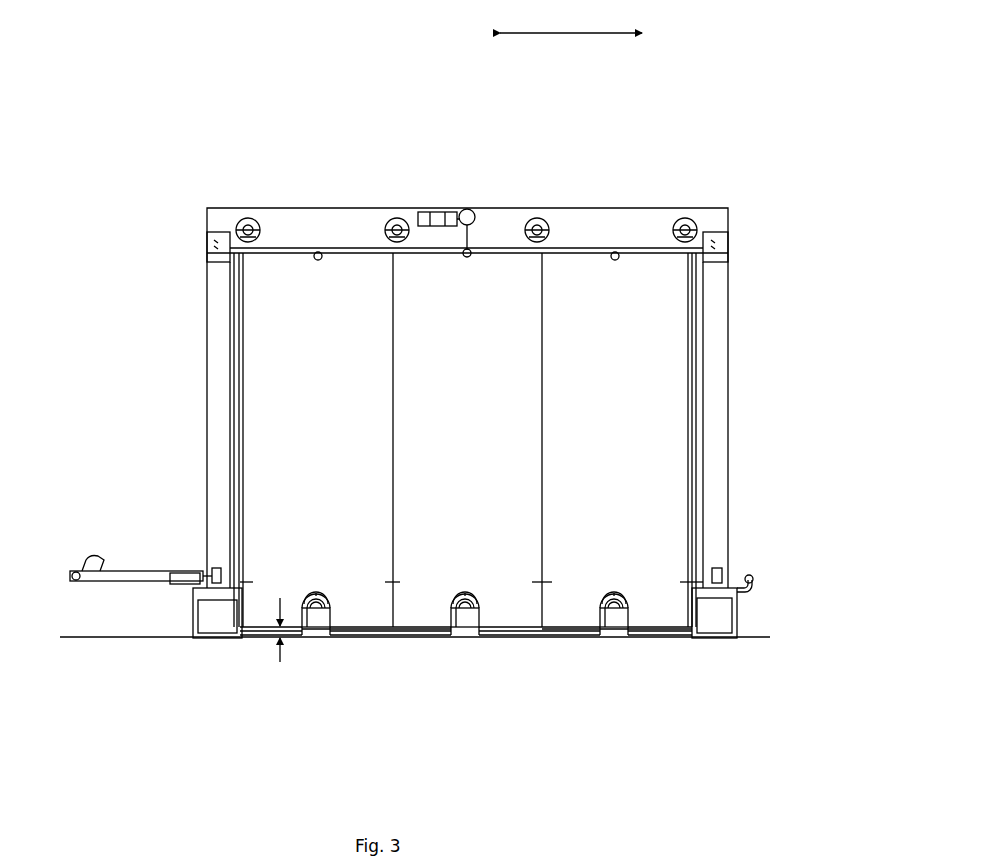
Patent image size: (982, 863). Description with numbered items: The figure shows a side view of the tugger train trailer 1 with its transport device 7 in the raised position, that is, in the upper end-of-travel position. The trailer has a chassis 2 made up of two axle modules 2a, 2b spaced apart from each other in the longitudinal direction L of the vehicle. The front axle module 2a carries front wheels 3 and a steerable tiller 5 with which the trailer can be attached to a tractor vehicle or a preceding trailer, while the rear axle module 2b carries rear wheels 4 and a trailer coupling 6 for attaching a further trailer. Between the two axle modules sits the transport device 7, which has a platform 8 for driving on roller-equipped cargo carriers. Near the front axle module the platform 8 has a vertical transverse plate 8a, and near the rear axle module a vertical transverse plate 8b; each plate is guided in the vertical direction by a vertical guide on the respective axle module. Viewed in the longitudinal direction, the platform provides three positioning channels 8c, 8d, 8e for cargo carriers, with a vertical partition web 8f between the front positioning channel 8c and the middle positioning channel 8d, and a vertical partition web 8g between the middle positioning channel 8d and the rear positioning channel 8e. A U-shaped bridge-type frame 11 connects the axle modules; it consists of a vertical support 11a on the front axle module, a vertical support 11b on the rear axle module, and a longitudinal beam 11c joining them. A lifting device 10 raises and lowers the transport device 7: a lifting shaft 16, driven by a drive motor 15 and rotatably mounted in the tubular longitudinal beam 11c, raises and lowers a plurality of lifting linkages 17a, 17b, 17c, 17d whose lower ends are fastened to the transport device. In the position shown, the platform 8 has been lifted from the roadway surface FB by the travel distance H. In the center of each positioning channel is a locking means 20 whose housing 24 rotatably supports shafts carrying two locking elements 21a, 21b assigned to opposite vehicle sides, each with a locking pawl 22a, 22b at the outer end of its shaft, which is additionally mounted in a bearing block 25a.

The tugger train trailer 1 is at (689, 190).
The chassis 2 is at (190, 645).
The front axle module 2a is at (195, 620).
The rear axle module 2b is at (732, 640).
The front wheels 3 is at (215, 640).
The rear wheels 4 is at (713, 640).
The steerable tiller 5 is at (128, 565).
The trailer coupling 6 is at (750, 578).
The transport device 7 is at (452, 690).
The platform 8 is at (457, 693).
The vertical transverse plate 8a is at (250, 633).
The vertical transverse plate 8b is at (676, 636).
The front positioning channel 8c is at (347, 634).
The middle positioning channel 8d is at (490, 634).
The rear positioning channel 8e is at (557, 634).
The vertical partition web 8f is at (385, 634).
The vertical partition web 8g is at (558, 634).
The lifting device 10 is at (385, 264).
The bridge-type frame 11 is at (457, 379).
The vertical support 11a is at (222, 282).
The vertical support 11b is at (718, 285).
The longitudinal beam 11c is at (222, 215).
The drive motor 15 is at (435, 208).
The lifting shaft 16 is at (393, 223).
The lifting linkage 17a is at (245, 290).
The lifting linkage 17b is at (393, 292).
The lifting linkage 17c is at (540, 292).
The lifting linkage 17d is at (688, 290).
The locking means 20 is at (316, 578).
The locking element 21a is at (304, 600).
The locking element 21b is at (330, 600).
The locking pawl 22a is at (443, 556).
The locking pawl 22b is at (492, 554).
The housing 24 is at (320, 630).
The bearing block 25a is at (305, 636).
The roadway FB is at (97, 642).
The travel distance H is at (278, 660).
The longitudinal direction L is at (571, 22).